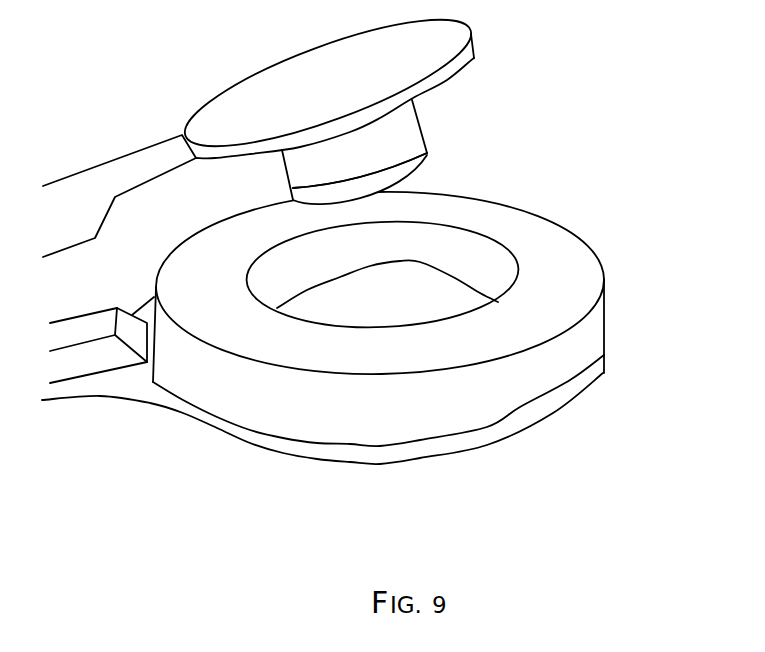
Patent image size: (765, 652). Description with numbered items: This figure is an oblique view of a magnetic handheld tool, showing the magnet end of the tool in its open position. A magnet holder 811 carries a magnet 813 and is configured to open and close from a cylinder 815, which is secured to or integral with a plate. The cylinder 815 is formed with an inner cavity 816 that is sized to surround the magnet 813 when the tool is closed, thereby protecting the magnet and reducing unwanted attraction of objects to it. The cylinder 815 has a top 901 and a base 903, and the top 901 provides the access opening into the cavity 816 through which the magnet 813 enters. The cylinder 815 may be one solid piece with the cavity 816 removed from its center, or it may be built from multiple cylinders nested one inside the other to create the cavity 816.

The magnet holder 811 is at (416, 114).
The magnet 813 is at (426, 147).
The cylinder 815 is at (604, 315).
The inner cavity 816 is at (450, 253).
The top 901 is at (570, 258).
The base 903 is at (604, 360).